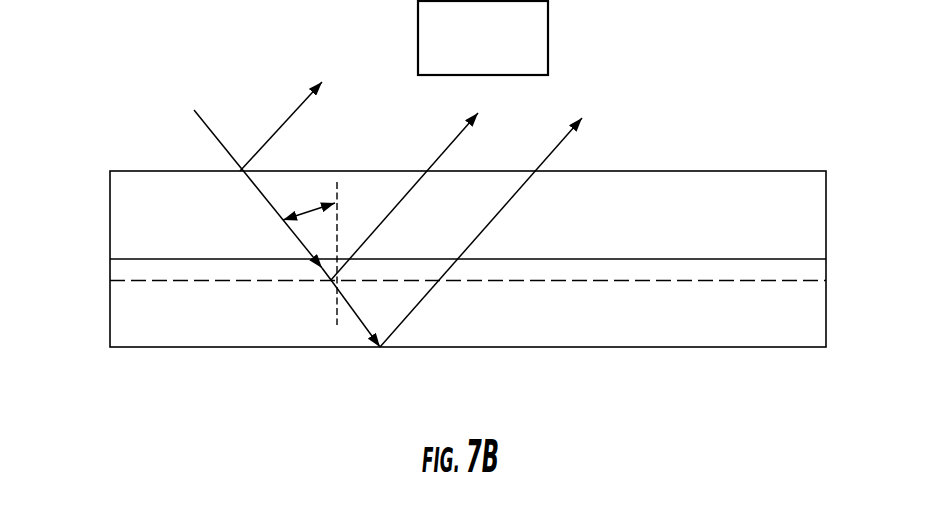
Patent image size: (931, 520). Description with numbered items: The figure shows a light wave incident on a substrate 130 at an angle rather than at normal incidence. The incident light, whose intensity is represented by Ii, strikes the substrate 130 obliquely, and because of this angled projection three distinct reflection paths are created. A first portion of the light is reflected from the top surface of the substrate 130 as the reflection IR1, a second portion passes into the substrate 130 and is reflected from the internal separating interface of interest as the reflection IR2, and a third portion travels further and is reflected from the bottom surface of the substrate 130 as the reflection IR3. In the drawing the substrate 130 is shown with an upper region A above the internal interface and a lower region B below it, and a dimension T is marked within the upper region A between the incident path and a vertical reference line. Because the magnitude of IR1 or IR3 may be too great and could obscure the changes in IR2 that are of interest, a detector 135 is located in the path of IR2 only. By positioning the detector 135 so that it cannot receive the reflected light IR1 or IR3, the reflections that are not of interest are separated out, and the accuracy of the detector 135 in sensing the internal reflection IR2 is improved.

The substrate 130 is at (431, 259).
The detector 135 is at (472, 66).
The layer A is at (468, 236).
The layer B is at (468, 290).
The thickness of layer A T is at (310, 250).
The incident intensity Ii is at (278, 216).
The top surface reflection IR1 is at (299, 126).
The internal surface reflection IR2 is at (426, 191).
The bottom surface reflection IR3 is at (505, 223).